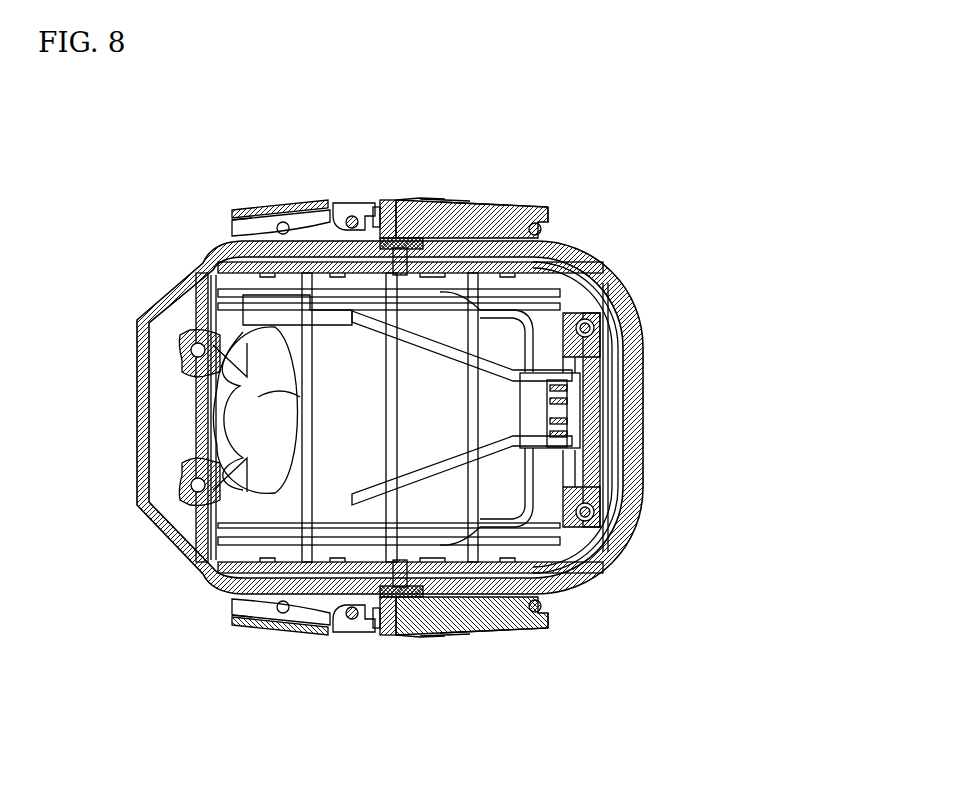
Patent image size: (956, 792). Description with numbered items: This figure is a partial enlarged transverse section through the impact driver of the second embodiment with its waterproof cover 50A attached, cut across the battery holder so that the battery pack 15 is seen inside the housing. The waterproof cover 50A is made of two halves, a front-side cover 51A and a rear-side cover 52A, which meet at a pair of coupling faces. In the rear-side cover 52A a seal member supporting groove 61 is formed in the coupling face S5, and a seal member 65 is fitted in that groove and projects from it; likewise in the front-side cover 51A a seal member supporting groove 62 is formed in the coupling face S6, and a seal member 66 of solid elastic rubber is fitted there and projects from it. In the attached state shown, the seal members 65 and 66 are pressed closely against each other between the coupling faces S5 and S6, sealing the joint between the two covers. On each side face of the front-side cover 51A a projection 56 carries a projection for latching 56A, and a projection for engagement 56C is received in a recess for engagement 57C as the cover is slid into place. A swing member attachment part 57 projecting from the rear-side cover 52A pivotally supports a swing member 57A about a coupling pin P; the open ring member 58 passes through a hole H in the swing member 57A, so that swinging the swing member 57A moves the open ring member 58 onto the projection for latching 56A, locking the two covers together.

The battery pack 15 is at (297, 400).
The waterproof cover 50A is at (387, 417).
The front-side cover 51A is at (715, 497).
The rear-side cover 52A is at (126, 487).
The projection 56 is at (527, 205).
The projection for latching 56A is at (550, 211).
The projection for engagement 56C is at (413, 197).
The swing member attachment part 57 is at (328, 205).
The swing member 57A is at (255, 207).
The recess for engagement 57C is at (380, 210).
The open ring member 58 is at (543, 227).
The seal member supporting groove 61 is at (318, 222).
The seal member supporting groove 62 is at (505, 203).
The seal member 65 is at (386, 210).
The seal member 66 is at (458, 206).
The hole H is at (240, 223).
The coupling pin P is at (352, 216).
The coupling face S6 is at (433, 198).
The coupling face S5 is at (454, 381).